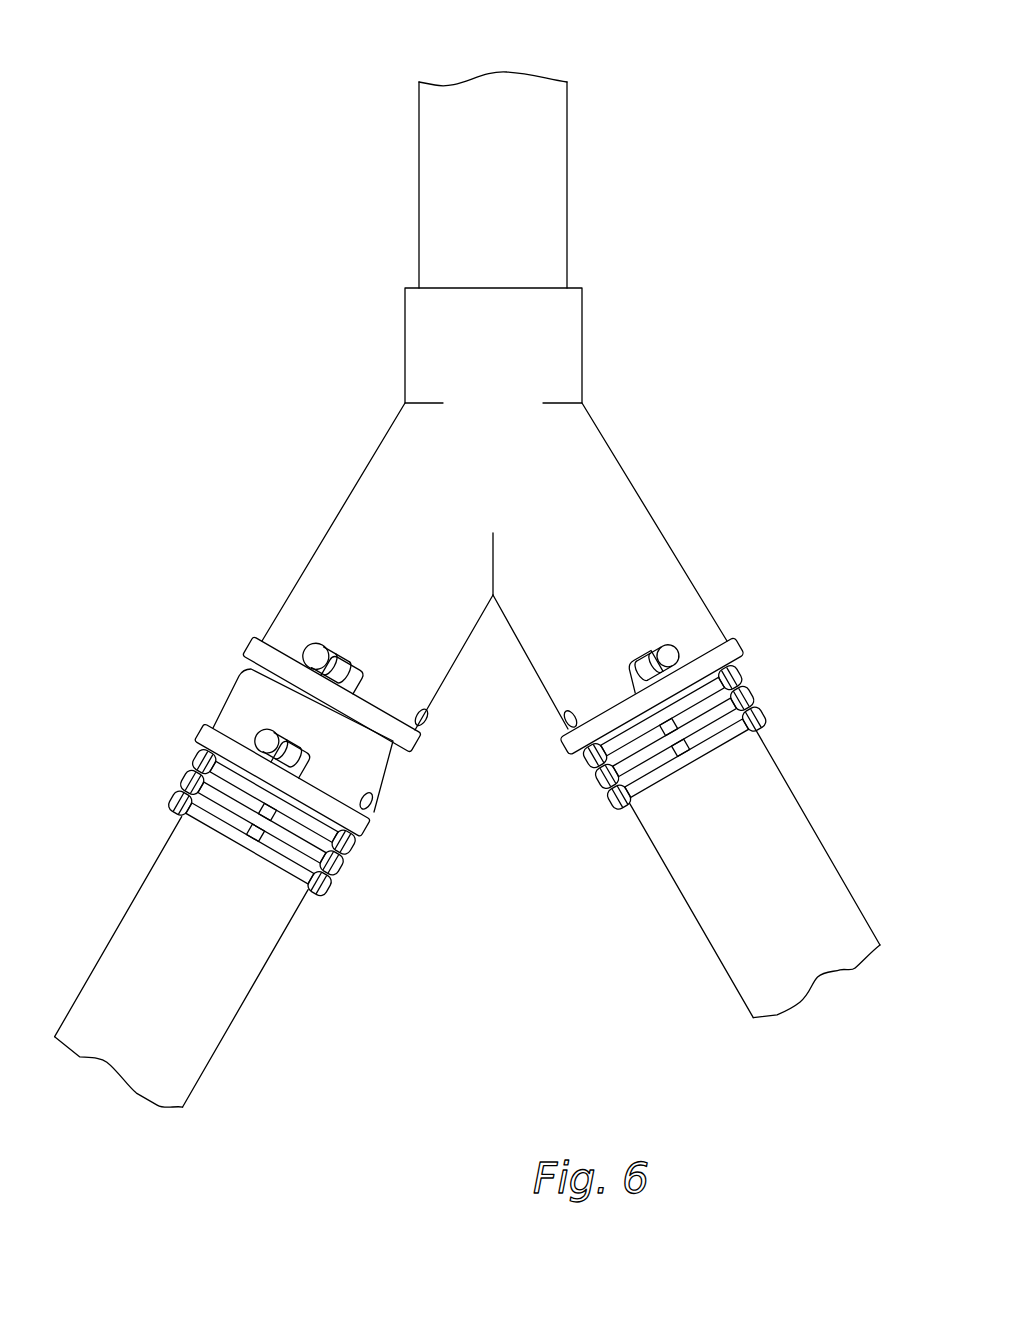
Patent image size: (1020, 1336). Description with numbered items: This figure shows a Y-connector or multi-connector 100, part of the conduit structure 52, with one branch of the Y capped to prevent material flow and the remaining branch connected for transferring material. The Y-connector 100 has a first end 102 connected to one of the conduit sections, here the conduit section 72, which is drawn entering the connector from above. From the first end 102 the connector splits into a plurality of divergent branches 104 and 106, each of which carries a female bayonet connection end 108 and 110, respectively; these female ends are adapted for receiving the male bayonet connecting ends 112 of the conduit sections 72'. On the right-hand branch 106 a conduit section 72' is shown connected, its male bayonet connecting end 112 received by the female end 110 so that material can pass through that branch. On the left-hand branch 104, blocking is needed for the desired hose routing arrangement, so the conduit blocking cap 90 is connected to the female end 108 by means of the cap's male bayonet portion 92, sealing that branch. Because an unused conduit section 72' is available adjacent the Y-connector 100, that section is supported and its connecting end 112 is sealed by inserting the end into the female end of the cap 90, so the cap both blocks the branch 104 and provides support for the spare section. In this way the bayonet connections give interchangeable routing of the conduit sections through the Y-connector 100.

The conduit structure 52 is at (292, 207).
The conduit section 72 is at (549, 180).
The conduit section 72' is at (474, 924).
The conduit blocking cap 90 is at (172, 666).
The male bayonet portion 92 is at (321, 648).
The Y-connector 100 is at (737, 522).
The first end 102 is at (570, 338).
The first divergent branch 104 is at (337, 518).
The second divergent branch 106 is at (700, 610).
The female bayonet connection end 108 is at (282, 638).
The female bayonet connection end 110 is at (706, 640).
The male bayonet connecting end 112 is at (224, 716).